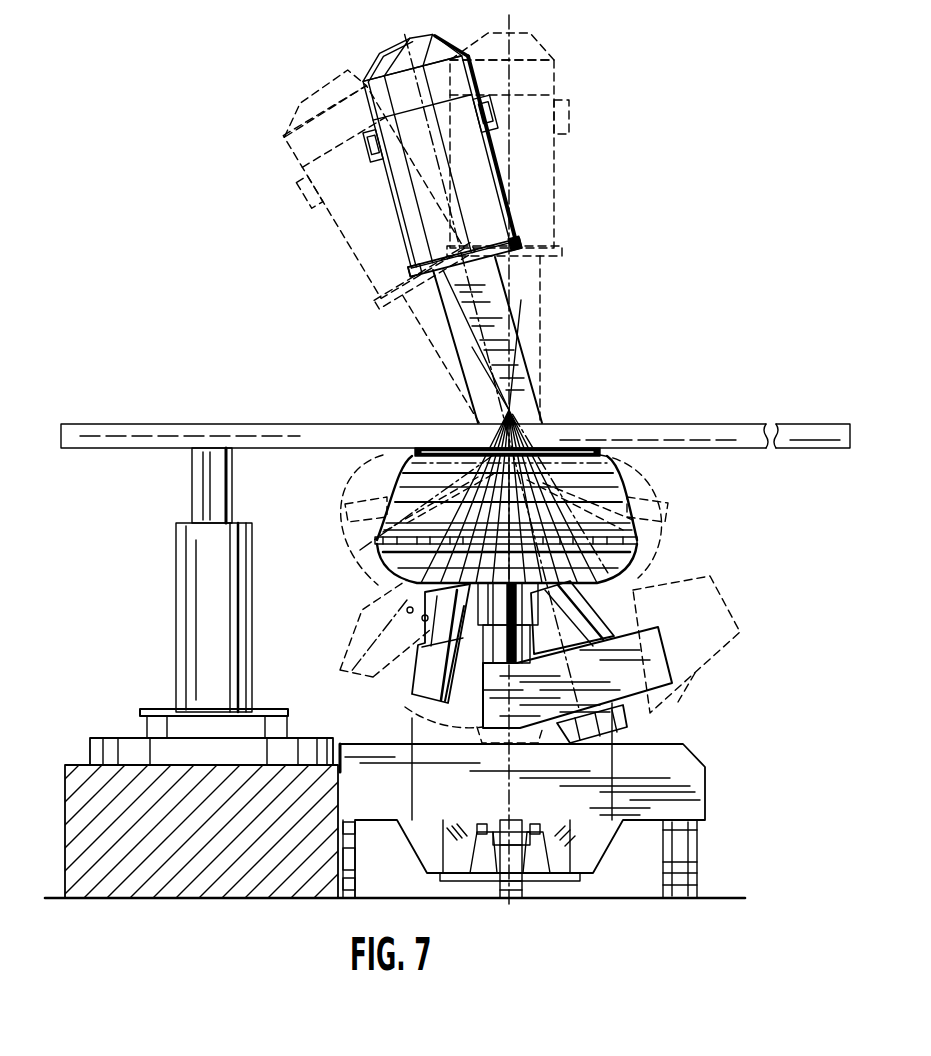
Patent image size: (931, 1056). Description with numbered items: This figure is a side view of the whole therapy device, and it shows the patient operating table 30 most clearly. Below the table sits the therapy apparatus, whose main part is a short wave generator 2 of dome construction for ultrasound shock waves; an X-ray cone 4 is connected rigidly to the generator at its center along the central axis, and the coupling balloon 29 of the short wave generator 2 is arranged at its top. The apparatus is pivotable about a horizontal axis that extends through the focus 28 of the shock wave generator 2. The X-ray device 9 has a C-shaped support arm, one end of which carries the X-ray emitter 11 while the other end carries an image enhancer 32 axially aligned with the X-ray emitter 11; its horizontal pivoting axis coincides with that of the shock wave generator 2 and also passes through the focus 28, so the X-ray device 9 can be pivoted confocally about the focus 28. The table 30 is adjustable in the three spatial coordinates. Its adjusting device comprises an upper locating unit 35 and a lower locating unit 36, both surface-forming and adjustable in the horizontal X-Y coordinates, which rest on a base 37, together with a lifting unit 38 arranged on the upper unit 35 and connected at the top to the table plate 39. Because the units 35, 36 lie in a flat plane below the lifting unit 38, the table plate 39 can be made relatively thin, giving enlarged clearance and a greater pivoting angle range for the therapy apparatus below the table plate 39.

The short wave generator 2 is at (612, 556).
The X-ray cone 4 is at (430, 672).
The X-ray device 9 is at (572, 229).
The X-ray emitter 11 is at (595, 597).
The focus 28 is at (531, 413).
The coupling balloon 29 is at (614, 492).
The patient operating table 30 is at (180, 416).
The image enhancer 32 is at (478, 163).
The upper locating unit 35 is at (262, 728).
The lower locating unit 36 is at (131, 750).
The base 37 is at (96, 785).
The lifting unit 38 is at (190, 572).
The table plate 39 is at (748, 432).